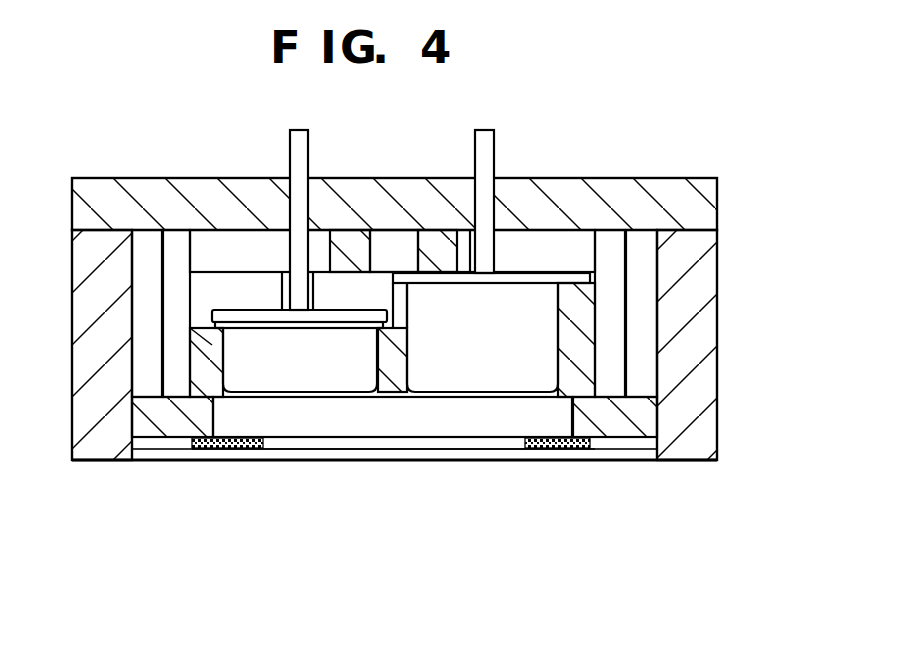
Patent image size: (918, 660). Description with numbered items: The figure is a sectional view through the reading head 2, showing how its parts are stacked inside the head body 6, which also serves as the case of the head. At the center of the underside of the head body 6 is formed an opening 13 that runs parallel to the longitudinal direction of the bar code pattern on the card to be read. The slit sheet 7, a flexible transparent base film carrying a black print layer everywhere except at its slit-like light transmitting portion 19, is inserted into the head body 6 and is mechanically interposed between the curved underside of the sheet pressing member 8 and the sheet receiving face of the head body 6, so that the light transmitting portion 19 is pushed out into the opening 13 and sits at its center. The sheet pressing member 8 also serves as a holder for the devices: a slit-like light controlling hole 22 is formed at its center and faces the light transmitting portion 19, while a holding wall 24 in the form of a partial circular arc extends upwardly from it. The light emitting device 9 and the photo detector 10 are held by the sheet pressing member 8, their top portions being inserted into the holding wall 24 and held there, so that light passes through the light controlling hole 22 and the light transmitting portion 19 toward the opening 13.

The reading head 2 is at (574, 180).
The head body 6 is at (705, 290).
The slit sheet 7 is at (555, 440).
The sheet pressing member 8 is at (638, 427).
The light emitting device 9 is at (531, 378).
The photo detector 10 is at (328, 383).
The opening 13 is at (188, 450).
The light transmitting portion 19 is at (395, 442).
The light controlling hole 22 is at (289, 425).
The holding wall 24 is at (203, 357).